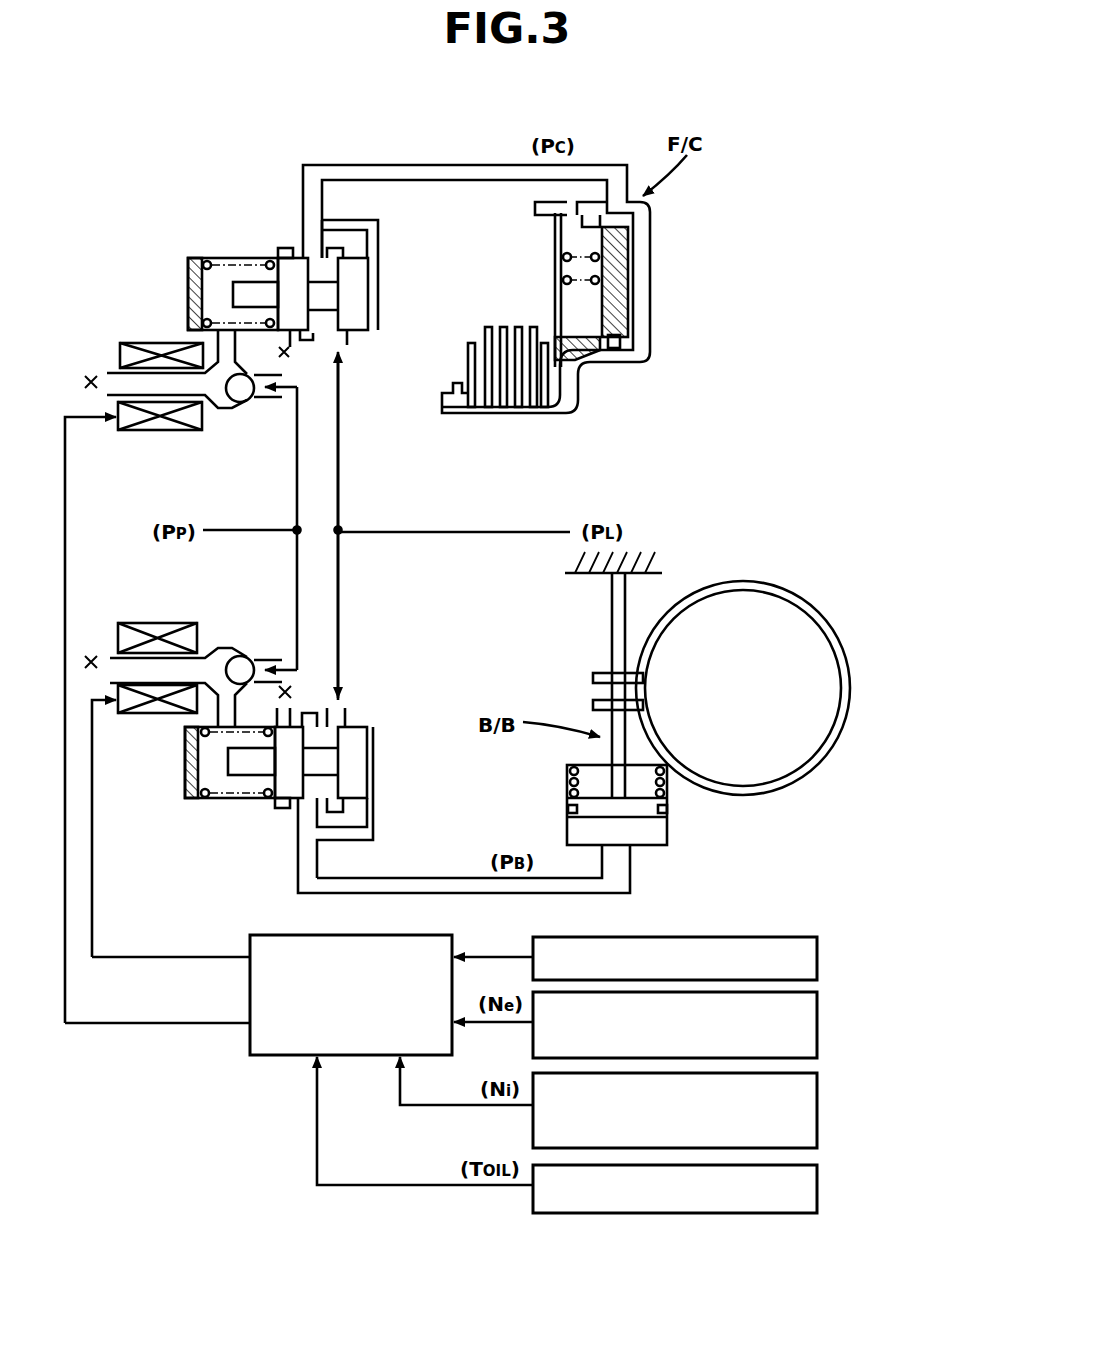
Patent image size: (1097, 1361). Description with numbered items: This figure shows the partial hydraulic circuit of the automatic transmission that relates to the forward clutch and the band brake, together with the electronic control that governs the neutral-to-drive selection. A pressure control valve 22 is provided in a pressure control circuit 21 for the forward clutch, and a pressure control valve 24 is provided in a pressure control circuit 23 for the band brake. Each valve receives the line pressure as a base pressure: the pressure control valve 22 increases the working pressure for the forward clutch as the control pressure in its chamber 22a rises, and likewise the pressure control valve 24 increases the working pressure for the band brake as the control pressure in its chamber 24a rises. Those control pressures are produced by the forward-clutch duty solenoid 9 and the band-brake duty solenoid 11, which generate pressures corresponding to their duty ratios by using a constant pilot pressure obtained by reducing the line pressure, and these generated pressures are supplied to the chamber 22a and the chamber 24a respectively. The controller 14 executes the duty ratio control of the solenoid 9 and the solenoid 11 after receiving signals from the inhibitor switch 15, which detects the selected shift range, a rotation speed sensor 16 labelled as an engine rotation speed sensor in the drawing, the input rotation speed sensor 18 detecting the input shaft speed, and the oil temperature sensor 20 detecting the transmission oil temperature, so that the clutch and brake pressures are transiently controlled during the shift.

The pressure control circuit 21 is at (435, 165).
The pressure control valve 22 is at (214, 243).
The chamber 22a is at (210, 290).
The forward-clutch duty solenoid 9 is at (138, 343).
The band-brake duty solenoid 11 is at (162, 623).
The pressure control valve 24 is at (377, 706).
The chamber 24a is at (212, 770).
The pressure control circuit 23 is at (418, 878).
The controller 14 is at (250, 1057).
The inhibitor switch 15 is at (817, 960).
The throttle opening degree sensor 16 is at (817, 1027).
The input rotation speed sensor 18 is at (817, 1105).
The oil temperature sensor 20 is at (817, 1187).